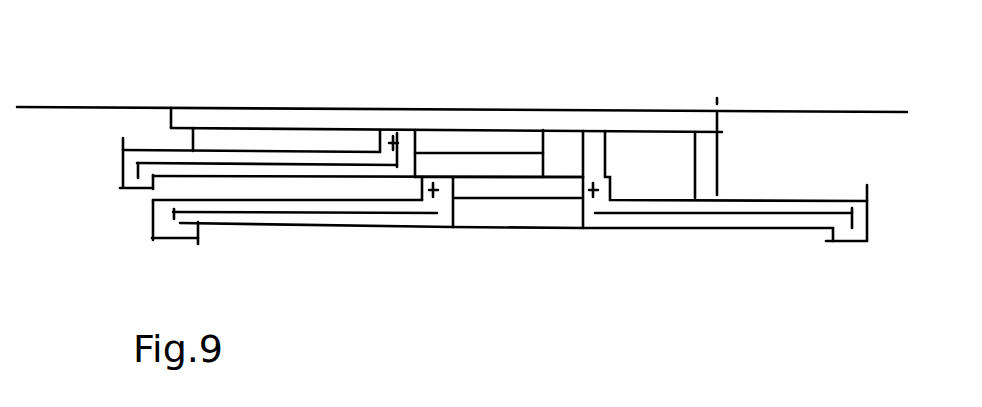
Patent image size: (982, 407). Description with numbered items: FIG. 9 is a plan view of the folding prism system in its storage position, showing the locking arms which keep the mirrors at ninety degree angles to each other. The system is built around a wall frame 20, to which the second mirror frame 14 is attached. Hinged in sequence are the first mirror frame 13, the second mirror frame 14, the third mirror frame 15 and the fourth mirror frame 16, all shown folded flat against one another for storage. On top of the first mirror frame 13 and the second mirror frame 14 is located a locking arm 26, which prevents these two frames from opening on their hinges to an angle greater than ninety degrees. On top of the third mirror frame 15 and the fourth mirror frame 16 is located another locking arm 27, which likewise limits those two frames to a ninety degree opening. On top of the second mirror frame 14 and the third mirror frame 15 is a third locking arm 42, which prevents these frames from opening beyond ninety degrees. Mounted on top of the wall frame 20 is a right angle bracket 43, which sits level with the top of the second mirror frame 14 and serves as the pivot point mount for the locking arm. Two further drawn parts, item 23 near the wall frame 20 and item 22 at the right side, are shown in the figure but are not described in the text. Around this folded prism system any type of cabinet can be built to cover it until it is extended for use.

The wall frame 20 is at (262, 118).
The connecting piece 23 is at (188, 150).
The locking arm 26 is at (205, 170).
The locking arm 27 is at (282, 217).
The second mirror frame 14 is at (441, 143).
The first mirror frame 13 is at (480, 168).
The right angle bracket 43 is at (597, 146).
The right upright 22 is at (720, 162).
The third mirror frame 15 is at (477, 187).
The fourth mirror frame 16 is at (546, 210).
The third locking arm 42 is at (675, 218).